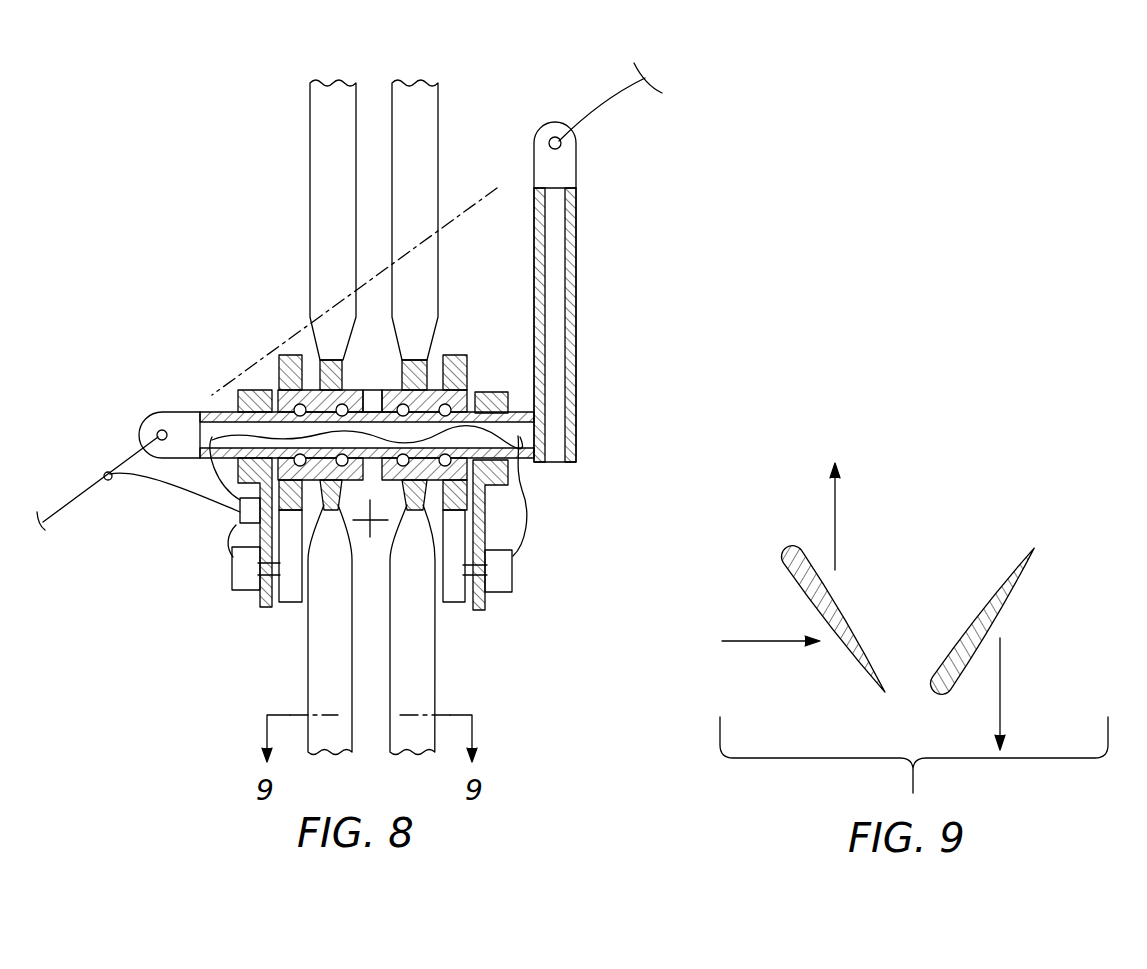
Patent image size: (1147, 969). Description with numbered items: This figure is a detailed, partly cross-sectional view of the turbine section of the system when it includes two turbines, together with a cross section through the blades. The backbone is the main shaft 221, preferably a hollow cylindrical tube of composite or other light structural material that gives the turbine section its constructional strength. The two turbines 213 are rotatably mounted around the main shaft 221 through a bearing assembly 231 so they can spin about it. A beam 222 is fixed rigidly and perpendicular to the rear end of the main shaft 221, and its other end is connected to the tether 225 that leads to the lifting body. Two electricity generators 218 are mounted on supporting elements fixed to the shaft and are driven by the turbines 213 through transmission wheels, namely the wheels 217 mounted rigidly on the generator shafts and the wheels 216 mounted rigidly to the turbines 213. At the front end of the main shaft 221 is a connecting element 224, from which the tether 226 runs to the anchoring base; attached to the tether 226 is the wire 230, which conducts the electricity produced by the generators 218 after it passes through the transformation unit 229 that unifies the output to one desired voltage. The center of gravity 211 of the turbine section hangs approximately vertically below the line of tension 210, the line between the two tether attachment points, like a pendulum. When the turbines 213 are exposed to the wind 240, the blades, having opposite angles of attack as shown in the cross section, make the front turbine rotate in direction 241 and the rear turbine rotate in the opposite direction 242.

In FIG. 8, the line of tension 210 is at (470, 192).
In FIG. 8, the center of gravity 211 is at (370, 535).
In FIG. 8, the turbine 213 is at (310, 150).
In FIG. 9, the turbine 213 is at (847, 593).
In FIG. 8, the transmission wheel 216 is at (455, 355).
In FIG. 8, the transmission wheel 217 is at (453, 607).
In FIG. 8, the electricity generator 218 is at (235, 590).
In FIG. 8, the main shaft 221 is at (215, 412).
In FIG. 8, the beam 222 is at (578, 380).
In FIG. 8, the connecting element 224 is at (162, 412).
In FIG. 8, the tether 225 is at (605, 113).
In FIG. 8, the tether 226 is at (130, 462).
In FIG. 8, the transformation unit 229 is at (233, 517).
In FIG. 8, the wire 230 is at (187, 493).
In FIG. 8, the bearing assembly 231 is at (372, 392).
In FIG. 9, the wind 240 is at (762, 642).
In FIG. 9, the rotation direction of front turbine 241 is at (838, 508).
In FIG. 9, the rotation direction of rear turbine 242 is at (1003, 702).